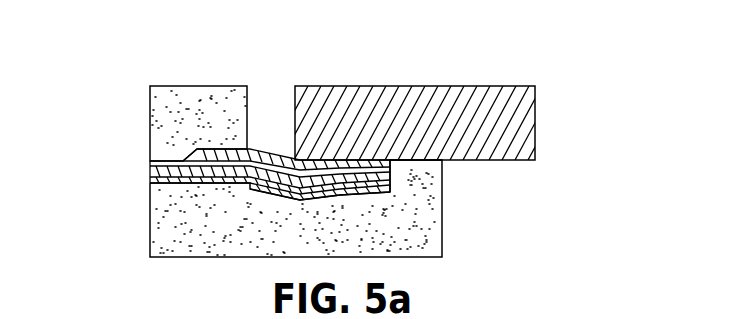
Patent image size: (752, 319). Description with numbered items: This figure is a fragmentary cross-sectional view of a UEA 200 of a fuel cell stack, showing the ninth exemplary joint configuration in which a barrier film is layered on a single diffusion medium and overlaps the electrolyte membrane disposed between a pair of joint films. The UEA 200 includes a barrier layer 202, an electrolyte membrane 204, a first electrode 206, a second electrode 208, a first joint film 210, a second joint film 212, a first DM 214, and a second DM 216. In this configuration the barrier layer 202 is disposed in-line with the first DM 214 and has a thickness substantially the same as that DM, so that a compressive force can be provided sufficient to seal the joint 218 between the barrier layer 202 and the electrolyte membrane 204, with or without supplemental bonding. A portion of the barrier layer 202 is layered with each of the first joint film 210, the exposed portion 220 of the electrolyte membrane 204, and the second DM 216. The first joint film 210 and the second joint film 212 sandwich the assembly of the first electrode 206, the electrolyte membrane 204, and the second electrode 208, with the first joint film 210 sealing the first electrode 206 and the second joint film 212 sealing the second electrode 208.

The UEA 200 is at (570, 57).
The barrier layer 202 is at (487, 86).
The electrolyte membrane 204 is at (150, 171).
The first electrode 206 is at (150, 163).
The second electrode 208 is at (150, 180).
The first joint film 210 is at (266, 150).
The second joint film 212 is at (290, 203).
The first DM layer 214 is at (172, 86).
The second DM layer 216 is at (182, 257).
The joint 218 is at (388, 178).
The exposed portion 220 is at (390, 163).